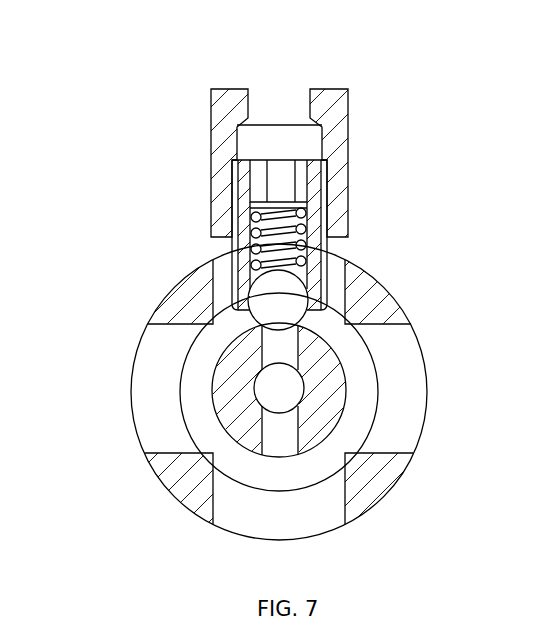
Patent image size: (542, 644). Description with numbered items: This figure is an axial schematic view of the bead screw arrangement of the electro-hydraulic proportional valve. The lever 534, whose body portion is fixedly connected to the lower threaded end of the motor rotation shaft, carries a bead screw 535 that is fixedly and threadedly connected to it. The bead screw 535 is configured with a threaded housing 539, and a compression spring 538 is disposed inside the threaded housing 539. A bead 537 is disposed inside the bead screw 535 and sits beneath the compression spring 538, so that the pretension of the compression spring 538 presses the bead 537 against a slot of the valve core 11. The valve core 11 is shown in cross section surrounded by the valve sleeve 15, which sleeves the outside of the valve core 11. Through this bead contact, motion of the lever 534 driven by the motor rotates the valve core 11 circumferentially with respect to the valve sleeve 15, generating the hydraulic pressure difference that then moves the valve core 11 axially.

The lever 534 is at (220, 157).
The bead screw 535 is at (288, 208).
The compression spring 538 is at (298, 245).
The threaded housing 539 is at (317, 208).
The bead 537 is at (278, 300).
The valve sleeve 15 is at (200, 291).
The valve core 11 is at (240, 408).